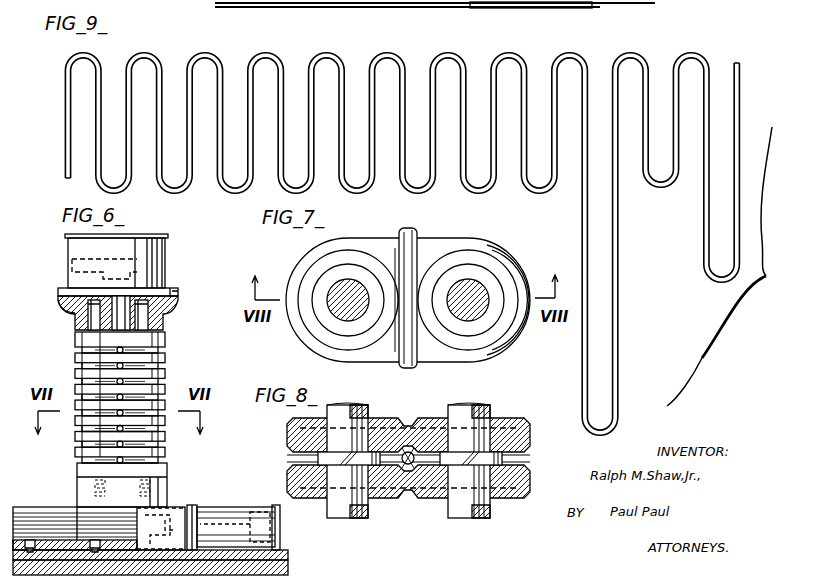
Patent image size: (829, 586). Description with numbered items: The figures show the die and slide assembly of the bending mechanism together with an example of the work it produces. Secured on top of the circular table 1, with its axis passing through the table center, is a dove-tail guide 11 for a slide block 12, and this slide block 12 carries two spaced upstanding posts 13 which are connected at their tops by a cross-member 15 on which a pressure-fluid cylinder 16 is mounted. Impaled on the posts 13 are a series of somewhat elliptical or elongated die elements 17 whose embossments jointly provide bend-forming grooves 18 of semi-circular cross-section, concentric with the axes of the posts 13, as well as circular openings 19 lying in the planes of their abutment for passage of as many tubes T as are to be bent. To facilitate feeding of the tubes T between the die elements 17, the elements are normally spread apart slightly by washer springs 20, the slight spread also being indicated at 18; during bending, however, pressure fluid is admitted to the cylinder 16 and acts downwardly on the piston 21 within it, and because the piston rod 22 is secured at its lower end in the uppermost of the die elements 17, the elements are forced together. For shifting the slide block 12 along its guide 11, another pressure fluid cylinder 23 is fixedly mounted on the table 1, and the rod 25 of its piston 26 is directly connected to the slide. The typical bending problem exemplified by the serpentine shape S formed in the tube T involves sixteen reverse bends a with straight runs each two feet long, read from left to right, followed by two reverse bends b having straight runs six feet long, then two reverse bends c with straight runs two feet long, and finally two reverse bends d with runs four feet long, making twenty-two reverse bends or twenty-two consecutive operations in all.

In FIG. 9, the tube T is at (65, 113).
In FIG. 7, the tube T is at (415, 232).
In FIG. 8, the tube T is at (408, 499).
In FIG. 9, the reverse bend a is at (92, 73).
In FIG. 9, the reverse bend b is at (581, 73).
In FIG. 9, the reverse bend c is at (631, 62).
In FIG. 9, the reverse bend d is at (692, 62).
In FIG. 9, the serpentine section S is at (724, 266).
In FIG. 6, the circular table 1 is at (288, 553).
In FIG. 6, the dove-tail guide 11 is at (33, 506).
In FIG. 6, the slide block 12 is at (158, 487).
In FIG. 6, the upstanding posts 13 is at (97, 316).
In FIG. 7, the upstanding posts 13 is at (330, 285).
In FIG. 8, the upstanding posts 13 is at (349, 508).
In FIG. 6, the cross-member 15 is at (178, 295).
In FIG. 6, the pressure-fluid cylinder 16 is at (152, 249).
In FIG. 6, the die elements 17 is at (163, 390).
In FIG. 7, the die elements 17 is at (466, 240).
In FIG. 8, the die elements 17 is at (530, 433).
In FIG. 6, the bend-forming grooves 18 is at (80, 382).
In FIG. 7, the bend-forming grooves 18 is at (382, 250).
In FIG. 8, the bend-forming grooves 18 is at (532, 459).
In FIG. 8, the circular openings 19 is at (408, 414).
In FIG. 8, the washer springs 20 is at (410, 470).
In FIG. 6, the piston 21 is at (71, 262).
In FIG. 6, the piston rod 22 is at (62, 306).
In FIG. 6, the pressure fluid cylinder 23 is at (237, 507).
In FIG. 6, the piston rod 25 is at (192, 506).
In FIG. 6, the piston 26 is at (262, 507).